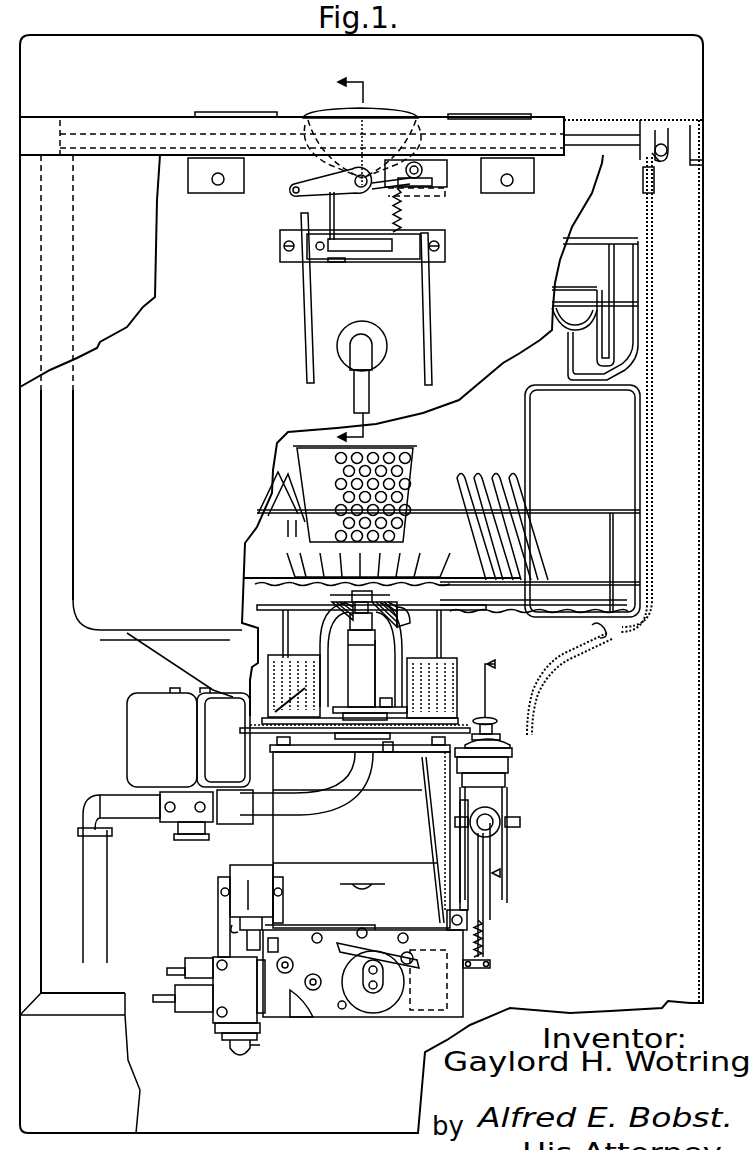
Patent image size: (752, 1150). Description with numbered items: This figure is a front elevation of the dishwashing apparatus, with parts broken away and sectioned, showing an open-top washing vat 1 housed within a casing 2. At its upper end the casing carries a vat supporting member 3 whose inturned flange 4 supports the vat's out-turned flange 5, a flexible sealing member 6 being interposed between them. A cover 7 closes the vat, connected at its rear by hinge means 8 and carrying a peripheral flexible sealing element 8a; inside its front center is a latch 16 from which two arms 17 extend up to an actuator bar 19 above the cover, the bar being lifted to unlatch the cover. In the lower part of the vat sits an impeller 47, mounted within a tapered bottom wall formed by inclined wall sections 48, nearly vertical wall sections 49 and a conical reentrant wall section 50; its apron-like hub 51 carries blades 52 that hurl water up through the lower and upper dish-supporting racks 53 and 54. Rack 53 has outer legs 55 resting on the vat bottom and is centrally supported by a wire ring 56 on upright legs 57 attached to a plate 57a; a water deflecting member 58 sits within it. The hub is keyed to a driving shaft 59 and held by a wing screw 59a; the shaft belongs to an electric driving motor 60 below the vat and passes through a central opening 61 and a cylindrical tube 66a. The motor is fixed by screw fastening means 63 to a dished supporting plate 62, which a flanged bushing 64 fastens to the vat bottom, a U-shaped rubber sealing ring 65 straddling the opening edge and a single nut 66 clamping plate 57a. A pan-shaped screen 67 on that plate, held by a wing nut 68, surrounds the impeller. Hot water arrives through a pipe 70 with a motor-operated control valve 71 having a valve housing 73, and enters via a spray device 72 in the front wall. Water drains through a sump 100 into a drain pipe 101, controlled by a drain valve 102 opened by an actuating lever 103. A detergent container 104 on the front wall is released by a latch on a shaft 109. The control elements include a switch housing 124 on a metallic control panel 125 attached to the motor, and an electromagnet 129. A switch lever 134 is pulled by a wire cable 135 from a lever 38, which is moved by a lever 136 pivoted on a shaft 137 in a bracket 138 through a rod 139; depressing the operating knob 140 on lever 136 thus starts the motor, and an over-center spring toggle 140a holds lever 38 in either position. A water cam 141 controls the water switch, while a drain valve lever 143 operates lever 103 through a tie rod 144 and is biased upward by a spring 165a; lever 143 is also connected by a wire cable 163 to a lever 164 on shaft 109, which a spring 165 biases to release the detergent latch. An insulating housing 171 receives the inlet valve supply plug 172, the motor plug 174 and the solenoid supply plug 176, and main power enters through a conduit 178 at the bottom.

The washing vat 1 is at (650, 526).
The casing 2 is at (706, 526).
The vat supporting member 3 is at (706, 140).
The inturned flange 4 is at (656, 190).
The out-turned flange 5 is at (668, 148).
The flexible sealing member 6 is at (664, 158).
The cover 7 is at (596, 120).
The hinge means 8 is at (225, 113).
The peripheral flexible sealing element 8a is at (663, 128).
The latch 16 is at (385, 111).
The arms 17 is at (310, 135).
The actuator bar 19 is at (375, 112).
The lever 38 is at (292, 187).
The impeller 47 is at (395, 605).
The wall sections 48 is at (127, 635).
The wall sections 49 is at (232, 718).
The reentrant wall section 50 is at (420, 758).
The apron-like hub 51 is at (400, 652).
The blades 52 is at (412, 610).
The lower dish-supporting rack 53 is at (530, 508).
The upper dish-supporting rack 54 is at (640, 318).
The outer legs 55 is at (605, 632).
The wire ring 56 is at (265, 608).
The upright legs 57 is at (289, 640).
The plate 57a is at (405, 710).
The water deflecting member 58 is at (420, 556).
The driving shaft 59 is at (361, 659).
The wing screw 59a is at (352, 592).
The electric driving motor 60 is at (278, 834).
The central opening 61 is at (388, 752).
The supporting plate 62 is at (440, 680).
The screw fastening means 63 is at (280, 757).
The bushing 64 is at (358, 732).
The rubber sealing ring 65 is at (345, 735).
The nut 66 is at (352, 712).
The cylindrical tube 66a is at (375, 637).
The pan-shaped screen 67 is at (275, 656).
The wing nut 68 is at (385, 712).
The pipe 70 is at (108, 921).
The control valve 71 is at (130, 747).
The spray device 72 is at (374, 348).
The valve housing 73 is at (180, 828).
The sump 100 is at (512, 744).
The drain pipe 101 is at (508, 858).
The drain valve 102 is at (514, 752).
The actuating lever 103 is at (500, 818).
The detergent container 104 is at (445, 196).
The shaft 109 is at (420, 165).
The switch housing 124 is at (316, 1018).
The control panel 125 is at (220, 914).
The electromagnet 129 is at (232, 872).
The switch lever 134 is at (388, 1012).
The wire cable 135 is at (308, 394).
The lever 136 is at (338, 262).
The shaft 137 is at (320, 240).
The bracket 138 is at (318, 256).
The rod 139 is at (338, 224).
The operating knob 140 is at (372, 252).
The over-center spring toggle 140a is at (368, 190).
The water cam 141 is at (375, 1014).
The drain valve lever 143 is at (493, 966).
The tie rod 144 is at (470, 921).
The wire cable 163 is at (432, 392).
The lever 164 is at (425, 172).
The spring 165 is at (402, 226).
The spring 165a is at (488, 942).
The insulating housing 171 is at (260, 1020).
The supply plug 172 is at (196, 962).
The plug 174 is at (190, 1010).
The supply plug 176 is at (284, 1022).
The conduit 178 is at (236, 1056).